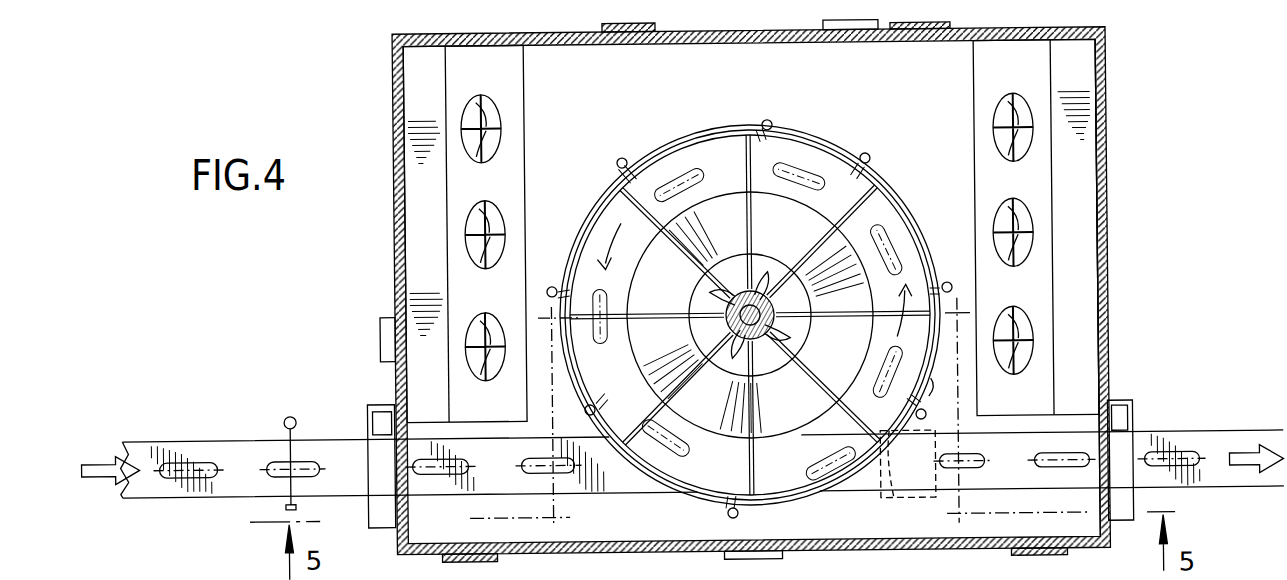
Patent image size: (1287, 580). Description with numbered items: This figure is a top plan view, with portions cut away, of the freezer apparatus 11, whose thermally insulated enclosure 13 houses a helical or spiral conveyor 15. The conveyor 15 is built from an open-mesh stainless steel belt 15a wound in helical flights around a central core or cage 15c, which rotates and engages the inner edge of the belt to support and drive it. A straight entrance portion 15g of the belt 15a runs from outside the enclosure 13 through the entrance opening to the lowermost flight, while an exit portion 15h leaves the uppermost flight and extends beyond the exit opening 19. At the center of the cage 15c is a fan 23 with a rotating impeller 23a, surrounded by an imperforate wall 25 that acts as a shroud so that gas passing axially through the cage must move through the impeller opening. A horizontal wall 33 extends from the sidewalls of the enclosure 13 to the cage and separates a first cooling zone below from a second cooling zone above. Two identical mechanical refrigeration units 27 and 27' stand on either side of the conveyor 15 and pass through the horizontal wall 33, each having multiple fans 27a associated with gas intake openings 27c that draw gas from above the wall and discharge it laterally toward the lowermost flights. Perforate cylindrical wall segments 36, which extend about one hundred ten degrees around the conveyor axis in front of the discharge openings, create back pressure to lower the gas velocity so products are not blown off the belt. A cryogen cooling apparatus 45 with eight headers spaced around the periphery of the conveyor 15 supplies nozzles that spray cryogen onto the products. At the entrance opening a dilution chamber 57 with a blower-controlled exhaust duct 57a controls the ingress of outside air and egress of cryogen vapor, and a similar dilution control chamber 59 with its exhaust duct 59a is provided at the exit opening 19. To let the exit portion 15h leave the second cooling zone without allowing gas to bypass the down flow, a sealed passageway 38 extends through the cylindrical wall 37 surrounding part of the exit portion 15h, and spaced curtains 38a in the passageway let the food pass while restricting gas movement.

The freezer apparatus 11 is at (1124, 132).
The thermally insulated enclosure 13 is at (1110, 198).
The helical or spiral conveyor 15 is at (860, 132).
The conveyor belt 15a is at (238, 435).
The central core or cage 15c is at (624, 386).
The entrance portion 15g is at (362, 472).
The exit portion 15h is at (1030, 475).
The exit opening 19 is at (1090, 496).
The fan 23 is at (716, 329).
The impeller 23a is at (790, 337).
The imperforate wall 25 is at (804, 242).
The mechanical refrigeration unit 27 is at (497, 234).
The mechanical refrigeration unit 27' is at (1001, 227).
The fans 27a is at (492, 128).
The gas intake openings 27c is at (492, 236).
The horizontal wall 33 is at (655, 102).
The perforate cylindrical wall segments 36 is at (610, 206).
The cylindrical wall 37 is at (931, 408).
The sealed passageway 38 is at (850, 494).
The spaced curtains 38a is at (905, 498).
The cryogen cooling apparatus 45 is at (762, 118).
The dilution chamber 57 is at (379, 528).
The blower-controlled exhaust duct 57a is at (380, 402).
The dilution control chamber 59 is at (1121, 526).
The blower-controlled exhaust duct 59a is at (1124, 404).